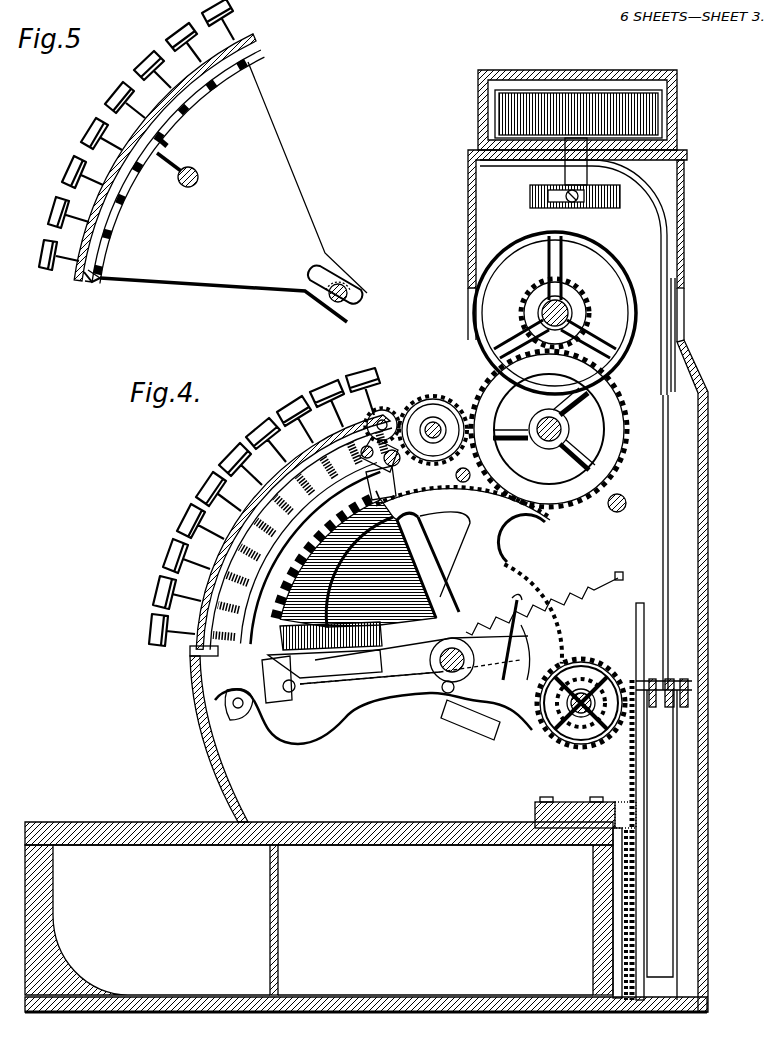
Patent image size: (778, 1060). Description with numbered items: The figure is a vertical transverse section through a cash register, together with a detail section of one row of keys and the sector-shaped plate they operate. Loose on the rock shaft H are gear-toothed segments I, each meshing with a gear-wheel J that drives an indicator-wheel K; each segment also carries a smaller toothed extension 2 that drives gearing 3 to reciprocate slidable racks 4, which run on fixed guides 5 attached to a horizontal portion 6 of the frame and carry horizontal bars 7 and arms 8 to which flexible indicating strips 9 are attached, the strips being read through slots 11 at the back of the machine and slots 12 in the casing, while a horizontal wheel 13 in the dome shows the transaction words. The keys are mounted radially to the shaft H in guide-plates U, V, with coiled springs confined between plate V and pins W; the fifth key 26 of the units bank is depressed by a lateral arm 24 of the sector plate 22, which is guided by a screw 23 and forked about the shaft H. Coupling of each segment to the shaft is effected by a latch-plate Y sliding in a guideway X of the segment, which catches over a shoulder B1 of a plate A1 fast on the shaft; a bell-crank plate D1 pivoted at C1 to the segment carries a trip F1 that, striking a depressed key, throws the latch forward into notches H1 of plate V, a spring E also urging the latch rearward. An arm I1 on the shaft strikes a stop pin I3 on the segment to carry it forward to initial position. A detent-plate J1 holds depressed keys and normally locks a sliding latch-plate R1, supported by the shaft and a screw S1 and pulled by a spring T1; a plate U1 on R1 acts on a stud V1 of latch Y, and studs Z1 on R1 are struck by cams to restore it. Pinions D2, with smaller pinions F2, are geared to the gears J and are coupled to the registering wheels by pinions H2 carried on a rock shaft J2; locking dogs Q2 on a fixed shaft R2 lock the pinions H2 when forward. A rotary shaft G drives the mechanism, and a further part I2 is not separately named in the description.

In FIG. 4, the extension 2 is at (571, 687).
In FIG. 4, the gearing 3 is at (600, 658).
In FIG. 4, the slidable racks 4 is at (627, 760).
In FIG. 4, the vertical fixed guides 5 is at (635, 613).
In FIG. 4, the horizontal portion of the frame 6 is at (563, 806).
In FIG. 4, the horizontal bars 7 is at (690, 692).
In FIG. 4, the arms 8 is at (678, 893).
In FIG. 4, the flexible indicating strips 9 is at (672, 533).
In FIG. 4, the slots 11 is at (680, 338).
In FIG. 4, the slots 12 is at (436, 440).
In FIG. 4, the horizontal wheel 13 is at (577, 127).
In FIG. 5, the sector shaped plate 22 is at (288, 202).
In FIG. 4, the sector shaped plate 22 is at (381, 572).
In FIG. 5, the guide screw 23 is at (198, 178).
In FIG. 5, the lateral arm 24 is at (168, 144).
In FIG. 4, the lateral arm 24 is at (250, 493).
In FIG. 5, the fifth key 26 is at (88, 120).
In FIG. 4, the fifth key 26 is at (200, 520).
In FIG. 4, the plate A1 is at (391, 581).
In FIG. 4, the shoulder B1 is at (433, 565).
In FIG. 4, the pivot C1 is at (347, 690).
In FIG. 4, the bell-crank plate D1 is at (317, 690).
In FIG. 4, the pinions D2 is at (438, 392).
In FIG. 4, the spring E is at (561, 429).
In FIG. 4, the trip F1 is at (312, 672).
In FIG. 4, the smaller pinion F2 is at (452, 395).
In FIG. 4, the rotary shaft G is at (623, 500).
In FIG. 5, the rock shaft H is at (341, 286).
In FIG. 4, the rock shaft H is at (480, 658).
In FIG. 4, the notches H1 is at (268, 589).
In FIG. 4, the smaller pinions H2 is at (393, 440).
In FIG. 4, the gear-toothed segments I is at (414, 557).
In FIG. 4, the arm I1 is at (487, 713).
In FIG. 4, the hub I2 is at (430, 428).
In FIG. 4, the stop pin I3 is at (513, 606).
In FIG. 4, the gear-wheel J is at (623, 461).
In FIG. 4, the detent-plate J1 is at (267, 663).
In FIG. 4, the rock shaft J2 is at (456, 476).
In FIG. 4, the indicator-wheels K is at (622, 263).
In FIG. 4, the locking arms or dogs Q2 is at (378, 416).
In FIG. 4, the sliding latch-plate R1 is at (265, 713).
In FIG. 4, the fixed shaft R2 is at (367, 483).
In FIG. 4, the screw S1 is at (212, 705).
In FIG. 4, the spring T1 is at (580, 580).
In FIG. 5, the guide-plate U is at (78, 264).
In FIG. 4, the upwardly-extending plate U1 is at (382, 615).
In FIG. 4, the inner guide-plate V is at (311, 554).
In FIG. 4, the stud V1 is at (307, 649).
In FIG. 4, the pins W is at (196, 653).
In FIG. 4, the guideway X is at (308, 627).
In FIG. 4, the sliding latch-plate Y is at (445, 720).
In FIG. 4, the studs Z1 is at (443, 698).